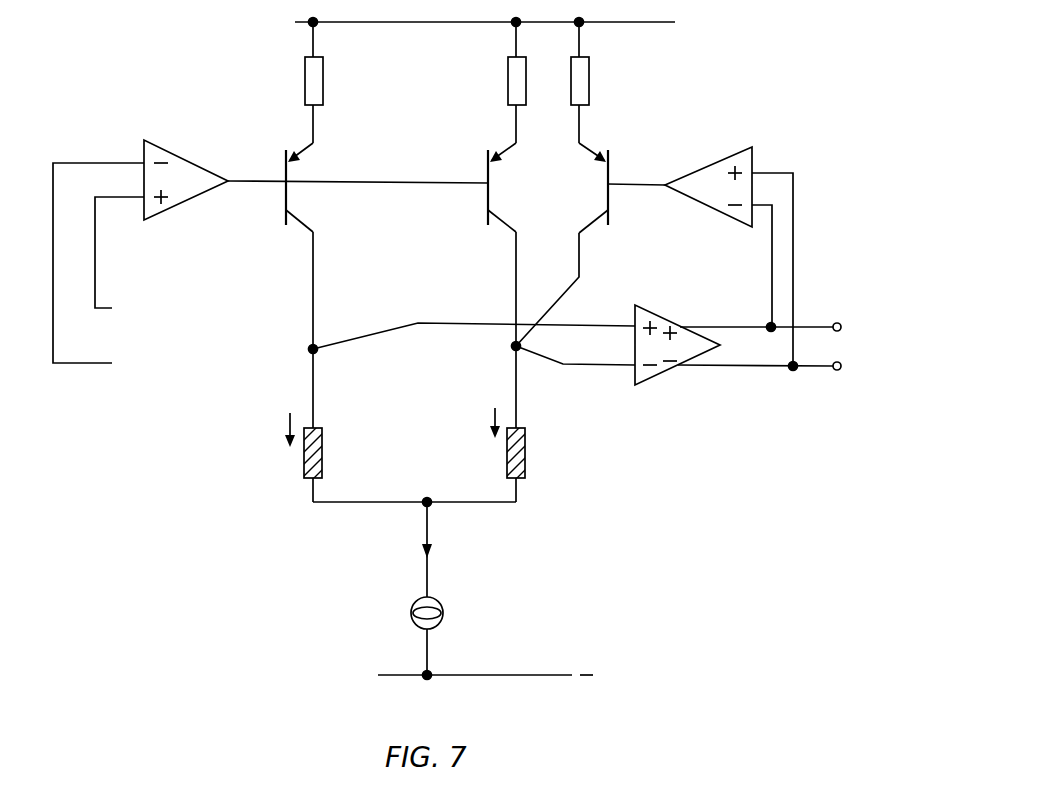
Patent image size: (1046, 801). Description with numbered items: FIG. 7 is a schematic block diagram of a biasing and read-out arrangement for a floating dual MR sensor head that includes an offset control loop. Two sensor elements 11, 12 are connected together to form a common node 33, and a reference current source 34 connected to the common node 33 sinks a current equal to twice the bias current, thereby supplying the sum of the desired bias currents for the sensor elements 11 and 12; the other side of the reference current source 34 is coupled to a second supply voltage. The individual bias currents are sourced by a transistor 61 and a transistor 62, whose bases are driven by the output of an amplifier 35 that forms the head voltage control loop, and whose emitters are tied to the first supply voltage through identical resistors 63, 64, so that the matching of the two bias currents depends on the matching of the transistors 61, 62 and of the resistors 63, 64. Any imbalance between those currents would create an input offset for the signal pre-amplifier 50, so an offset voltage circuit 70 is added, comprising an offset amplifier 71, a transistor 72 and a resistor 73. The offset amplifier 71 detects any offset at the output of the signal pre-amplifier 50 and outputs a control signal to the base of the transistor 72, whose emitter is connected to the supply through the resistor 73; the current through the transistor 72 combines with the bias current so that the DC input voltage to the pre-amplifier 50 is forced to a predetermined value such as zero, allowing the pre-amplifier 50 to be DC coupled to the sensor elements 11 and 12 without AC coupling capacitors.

The offset voltage circuit 70 is at (785, 97).
The resistor 63 is at (293, 82).
The resistor 64 is at (496, 82).
The resistor 73 is at (603, 82).
The transistor 61 is at (292, 285).
The transistor 62 is at (511, 285).
The transistor 72 is at (562, 244).
The amplifier 35 is at (192, 200).
The offset amplifier 71 is at (700, 202).
The signal pre-amplifier 50 is at (672, 368).
The sensor element 11 is at (313, 460).
The sensor element 12 is at (514, 460).
The common node 33 is at (430, 483).
The reference current source 34 is at (409, 615).